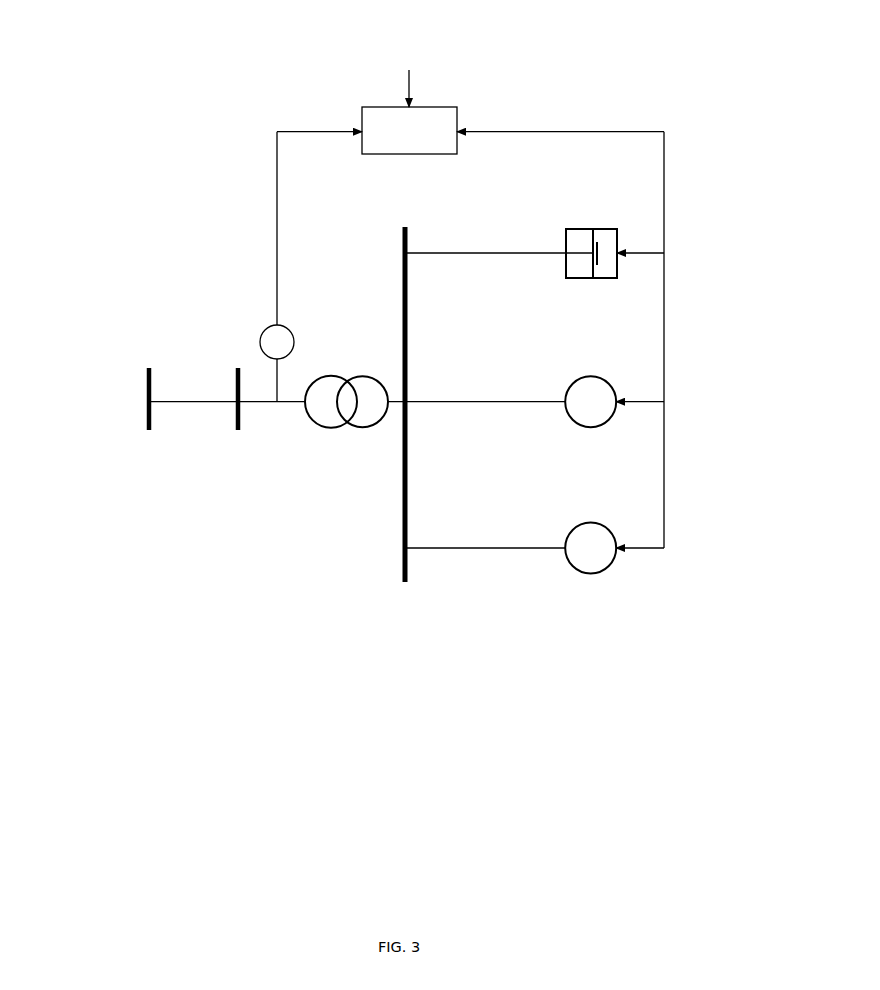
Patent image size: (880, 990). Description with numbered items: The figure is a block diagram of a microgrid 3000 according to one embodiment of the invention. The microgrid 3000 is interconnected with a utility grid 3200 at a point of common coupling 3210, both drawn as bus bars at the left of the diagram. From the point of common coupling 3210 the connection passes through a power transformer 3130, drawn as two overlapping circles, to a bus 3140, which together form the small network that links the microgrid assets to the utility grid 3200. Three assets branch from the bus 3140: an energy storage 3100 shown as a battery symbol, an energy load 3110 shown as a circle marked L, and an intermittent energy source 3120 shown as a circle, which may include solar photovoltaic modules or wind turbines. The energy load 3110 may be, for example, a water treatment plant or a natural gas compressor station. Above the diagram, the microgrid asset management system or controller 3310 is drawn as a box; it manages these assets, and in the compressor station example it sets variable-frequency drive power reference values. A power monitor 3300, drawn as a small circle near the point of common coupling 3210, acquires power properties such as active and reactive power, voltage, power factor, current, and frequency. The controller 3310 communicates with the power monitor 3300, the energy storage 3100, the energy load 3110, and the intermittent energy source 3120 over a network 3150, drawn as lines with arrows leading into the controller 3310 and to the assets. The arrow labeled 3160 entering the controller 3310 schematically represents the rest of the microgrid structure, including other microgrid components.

The microgrid 3000 is at (450, 36).
The microgrid asset management system or controller 3310 is at (447, 122).
The other microgrid components 3160 is at (388, 87).
The network 3150 is at (620, 132).
The power monitor 3300 is at (260, 342).
The utility grid 3200 is at (145, 380).
The point of common coupling 3210 is at (237, 430).
The power transformer 3130 is at (435, 391).
The bus 3140 is at (470, 404).
The energy storage 3100 is at (589, 227).
The energy load 3110 is at (591, 375).
The intermittent energy source 3120 is at (590, 522).